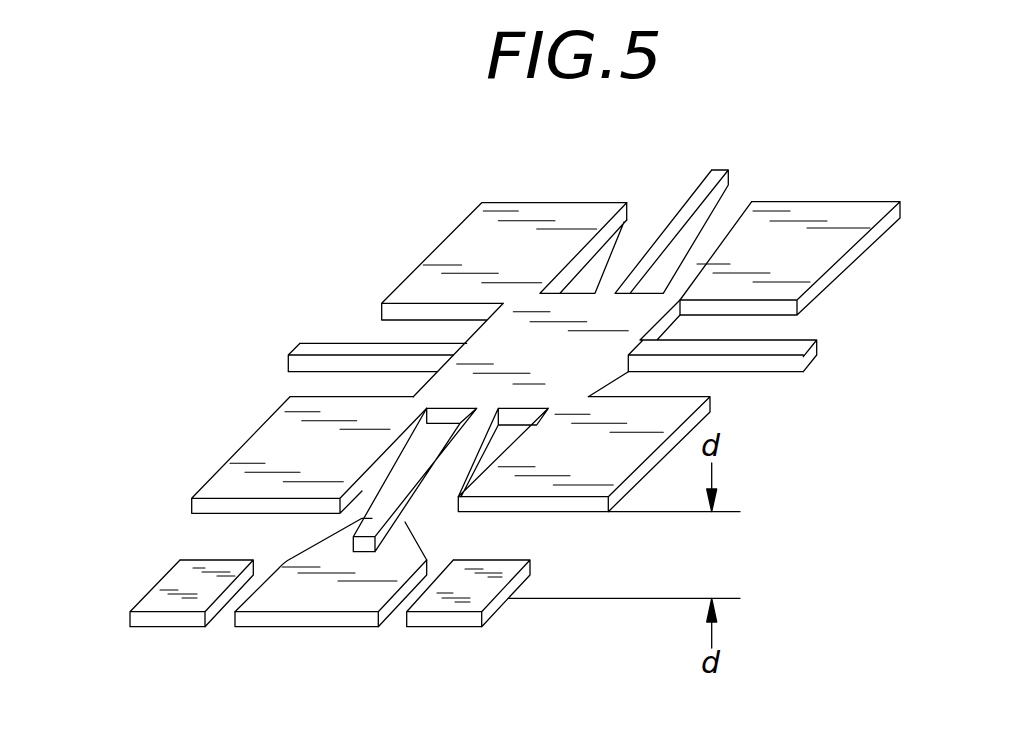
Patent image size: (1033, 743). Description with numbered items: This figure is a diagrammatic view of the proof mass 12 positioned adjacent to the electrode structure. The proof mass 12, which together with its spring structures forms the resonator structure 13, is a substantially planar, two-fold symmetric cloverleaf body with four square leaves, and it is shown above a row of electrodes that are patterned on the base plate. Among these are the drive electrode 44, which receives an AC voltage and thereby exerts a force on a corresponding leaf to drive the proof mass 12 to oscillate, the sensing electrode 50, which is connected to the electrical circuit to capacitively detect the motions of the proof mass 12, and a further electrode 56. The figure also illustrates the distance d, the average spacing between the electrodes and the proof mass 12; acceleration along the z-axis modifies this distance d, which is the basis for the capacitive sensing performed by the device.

The proof mass 12 is at (807, 222).
The resonator structure 13 is at (546, 332).
The drive electrode 44 is at (453, 600).
The sensing electrode 50 is at (317, 600).
The electrode 56 is at (184, 600).